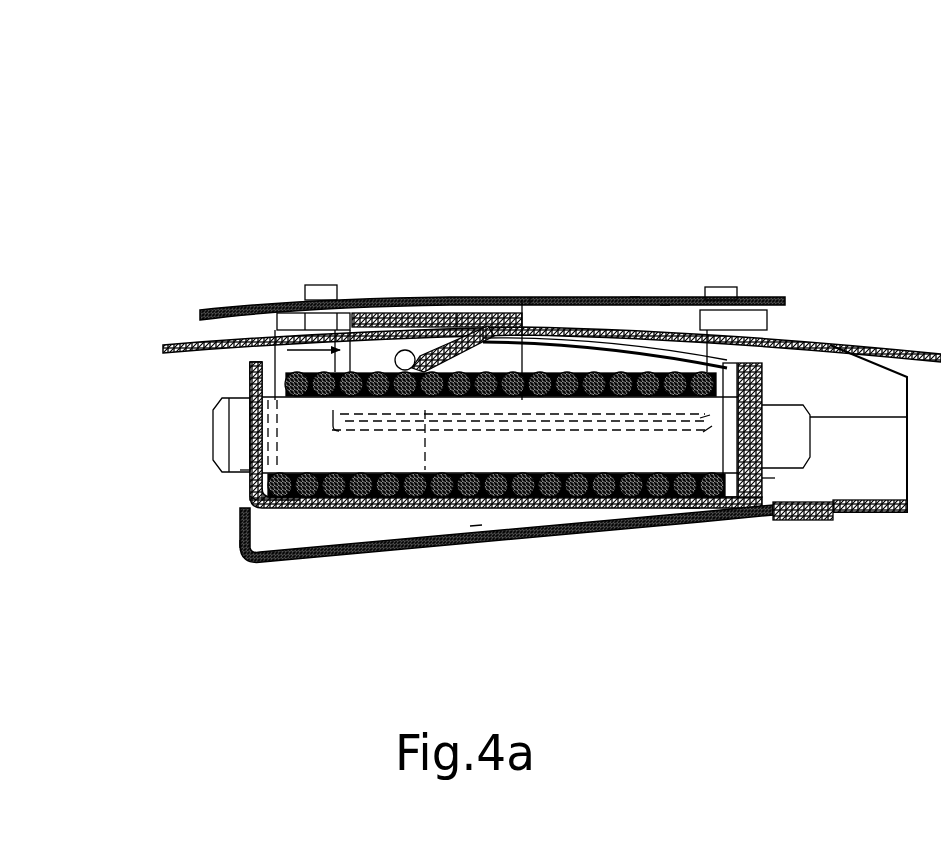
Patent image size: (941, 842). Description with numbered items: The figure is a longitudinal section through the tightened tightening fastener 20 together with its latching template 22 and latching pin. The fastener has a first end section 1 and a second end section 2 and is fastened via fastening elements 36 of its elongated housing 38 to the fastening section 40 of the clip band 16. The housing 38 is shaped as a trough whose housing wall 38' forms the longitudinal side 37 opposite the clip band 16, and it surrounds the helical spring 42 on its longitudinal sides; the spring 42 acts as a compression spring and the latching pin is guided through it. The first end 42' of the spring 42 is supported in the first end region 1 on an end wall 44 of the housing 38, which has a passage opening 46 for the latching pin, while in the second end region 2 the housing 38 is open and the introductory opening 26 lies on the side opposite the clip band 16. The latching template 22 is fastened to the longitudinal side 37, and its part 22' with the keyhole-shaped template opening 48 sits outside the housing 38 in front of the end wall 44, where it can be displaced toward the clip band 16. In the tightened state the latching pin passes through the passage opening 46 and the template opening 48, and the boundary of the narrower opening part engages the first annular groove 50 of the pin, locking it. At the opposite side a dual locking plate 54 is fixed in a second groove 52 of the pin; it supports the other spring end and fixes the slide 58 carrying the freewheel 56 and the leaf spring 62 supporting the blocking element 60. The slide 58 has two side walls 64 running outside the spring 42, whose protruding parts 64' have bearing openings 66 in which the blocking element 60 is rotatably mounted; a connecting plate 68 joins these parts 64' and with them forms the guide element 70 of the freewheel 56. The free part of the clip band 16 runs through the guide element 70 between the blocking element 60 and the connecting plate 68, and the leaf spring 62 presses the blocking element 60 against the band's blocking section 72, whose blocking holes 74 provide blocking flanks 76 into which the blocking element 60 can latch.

The first end section 1 is at (332, 245).
The second end section 2 is at (720, 175).
The clip band 16 is at (208, 319).
The tightening fastener 20 is at (232, 206).
The latching template 22 is at (506, 572).
The part of the latching template 22' is at (195, 575).
The introductory opening 26 is at (850, 513).
The fastening elements 36 is at (318, 285).
The longitudinal side of the housing 37 is at (794, 522).
The housing 38 is at (552, 302).
The housing wall 38' is at (490, 570).
The fastening section 40 is at (638, 300).
The helical spring 42 is at (506, 490).
The first end of the spring 42' is at (281, 569).
The end wall 44 is at (248, 376).
The passage opening 46 is at (245, 440).
The template opening 48 is at (250, 497).
The first annular groove 50 is at (245, 470).
The second groove 52 is at (770, 425).
The dual locking plate 54 is at (752, 365).
The freewheel 56 is at (258, 336).
The slide 58 is at (600, 300).
The blocking element 60 is at (457, 310).
The leaf spring 62 is at (665, 300).
The side walls 64 is at (512, 518).
The parts of the side walls 64' is at (333, 305).
The bearing openings 66 is at (404, 350).
The connecting plate 68 is at (474, 328).
The guide element 70 is at (388, 303).
The blocking section 72 is at (534, 356).
The blocking holes 74 is at (426, 340).
The blocking flanks 76 is at (530, 334).